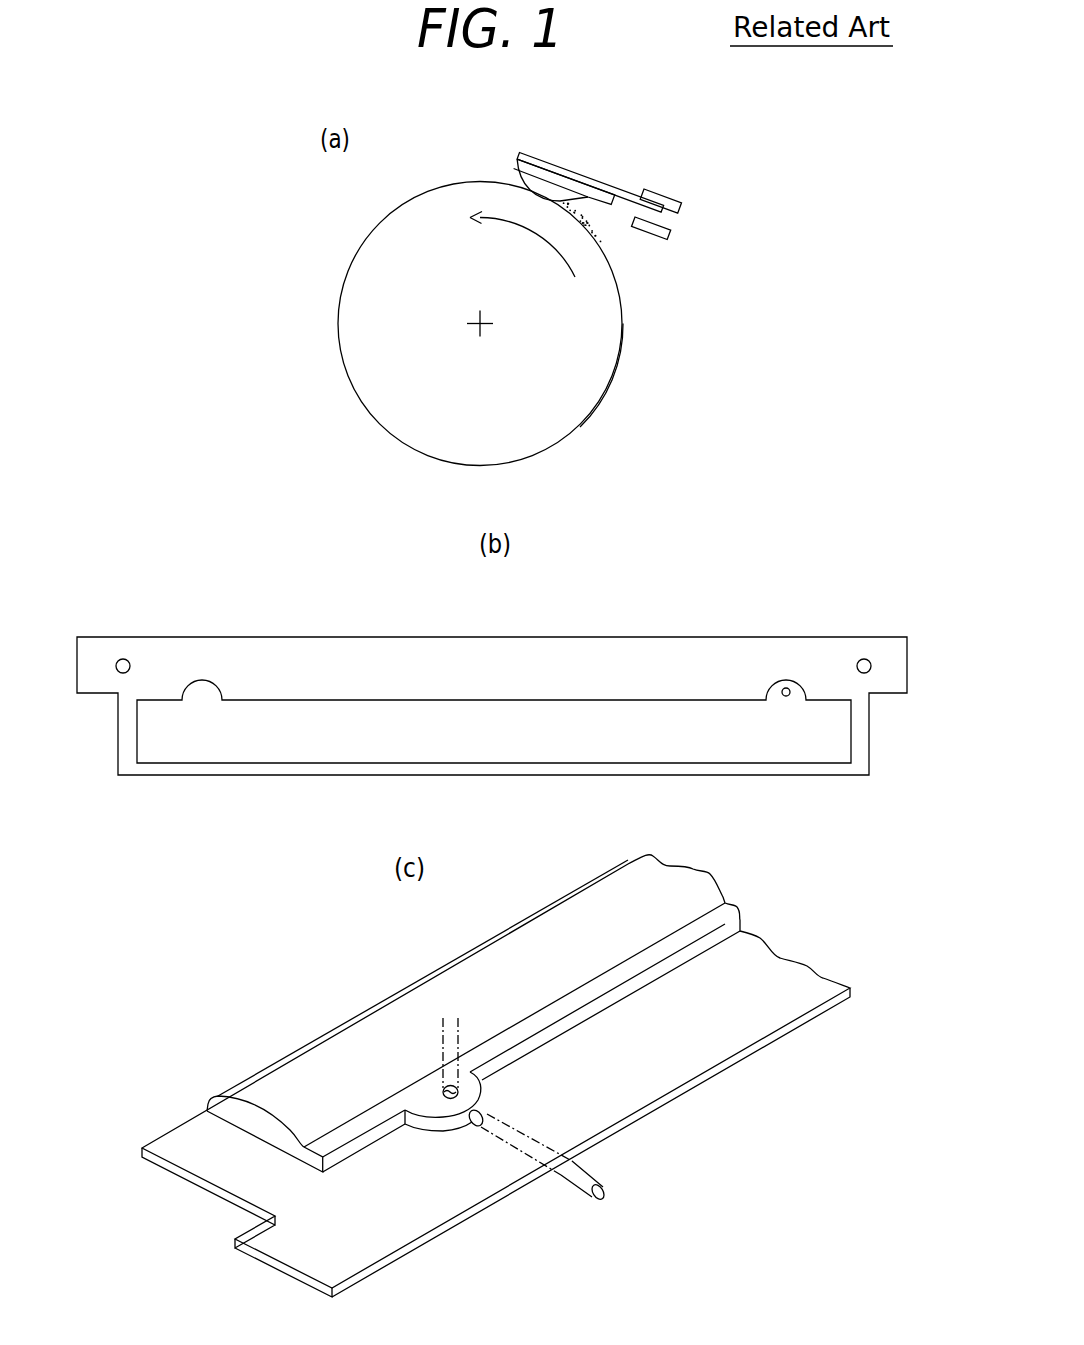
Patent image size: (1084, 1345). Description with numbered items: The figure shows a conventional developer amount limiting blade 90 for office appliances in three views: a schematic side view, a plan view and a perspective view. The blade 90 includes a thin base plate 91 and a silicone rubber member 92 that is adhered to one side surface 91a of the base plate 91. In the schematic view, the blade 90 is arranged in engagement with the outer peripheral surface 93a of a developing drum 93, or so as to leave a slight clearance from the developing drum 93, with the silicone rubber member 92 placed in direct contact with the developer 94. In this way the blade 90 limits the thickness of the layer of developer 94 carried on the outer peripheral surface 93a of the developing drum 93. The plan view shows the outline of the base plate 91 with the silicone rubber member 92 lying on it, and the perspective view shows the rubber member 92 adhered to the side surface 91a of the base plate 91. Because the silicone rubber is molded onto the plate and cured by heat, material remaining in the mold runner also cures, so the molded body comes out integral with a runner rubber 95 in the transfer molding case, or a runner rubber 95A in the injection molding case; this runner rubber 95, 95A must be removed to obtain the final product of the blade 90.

The developer amount limiting blade 90 is at (508, 143).
The thin base plate 91 is at (564, 168).
The one side surface of the base plate 91a is at (633, 1081).
The silicone rubber member 92 is at (520, 167).
The developing drum 93 is at (582, 372).
The outer peripheral surface of the developing drum 93a is at (623, 324).
The developer 94 is at (590, 225).
The runner rubber 95 is at (442, 1086).
The runner rubber 95A is at (605, 1195).